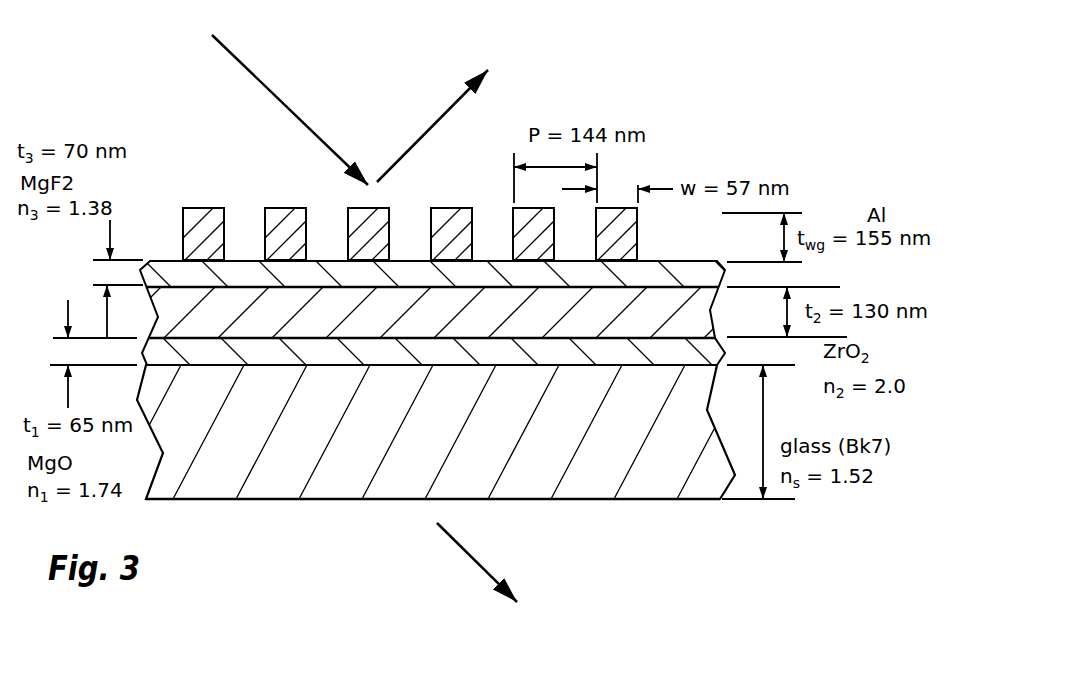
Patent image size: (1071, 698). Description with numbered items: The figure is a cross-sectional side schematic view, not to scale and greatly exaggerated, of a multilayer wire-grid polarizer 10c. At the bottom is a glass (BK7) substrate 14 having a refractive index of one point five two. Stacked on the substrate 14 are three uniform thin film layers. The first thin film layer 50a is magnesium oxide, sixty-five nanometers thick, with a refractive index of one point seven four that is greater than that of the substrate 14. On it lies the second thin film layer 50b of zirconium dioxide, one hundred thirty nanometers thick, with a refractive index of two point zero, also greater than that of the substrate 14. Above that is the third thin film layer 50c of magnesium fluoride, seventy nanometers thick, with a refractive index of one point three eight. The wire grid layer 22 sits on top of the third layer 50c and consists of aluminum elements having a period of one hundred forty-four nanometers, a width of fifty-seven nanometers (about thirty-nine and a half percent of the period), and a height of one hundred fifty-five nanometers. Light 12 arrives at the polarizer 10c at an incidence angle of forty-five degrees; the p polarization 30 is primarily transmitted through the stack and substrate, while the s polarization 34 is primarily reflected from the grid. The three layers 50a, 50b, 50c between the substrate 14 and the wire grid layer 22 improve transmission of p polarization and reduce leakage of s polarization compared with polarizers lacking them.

The multilayer wire-grid polarizer 10c is at (308, 528).
The light 12 is at (260, 82).
The substrate 14 is at (695, 500).
The wire grid layer 22 is at (212, 206).
The p polarization 30 is at (468, 557).
The s polarization 34 is at (447, 113).
The first thin film layer 50a is at (570, 275).
The second thin film layer 50b is at (605, 327).
The third thin film layer 50c is at (638, 358).